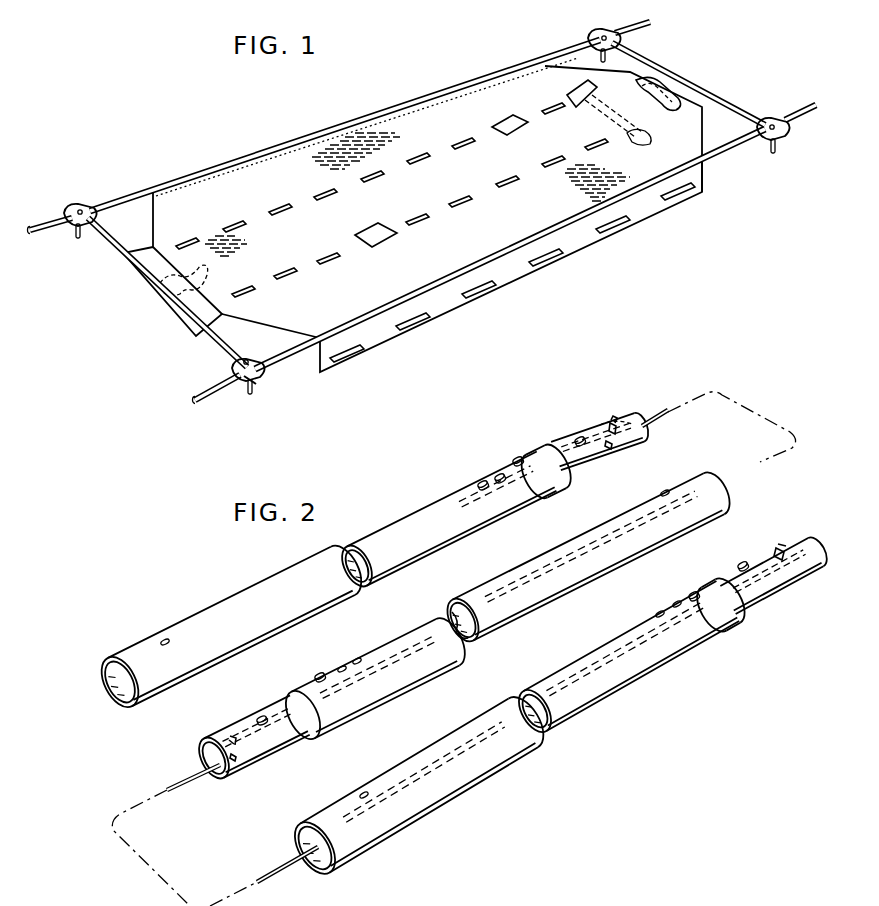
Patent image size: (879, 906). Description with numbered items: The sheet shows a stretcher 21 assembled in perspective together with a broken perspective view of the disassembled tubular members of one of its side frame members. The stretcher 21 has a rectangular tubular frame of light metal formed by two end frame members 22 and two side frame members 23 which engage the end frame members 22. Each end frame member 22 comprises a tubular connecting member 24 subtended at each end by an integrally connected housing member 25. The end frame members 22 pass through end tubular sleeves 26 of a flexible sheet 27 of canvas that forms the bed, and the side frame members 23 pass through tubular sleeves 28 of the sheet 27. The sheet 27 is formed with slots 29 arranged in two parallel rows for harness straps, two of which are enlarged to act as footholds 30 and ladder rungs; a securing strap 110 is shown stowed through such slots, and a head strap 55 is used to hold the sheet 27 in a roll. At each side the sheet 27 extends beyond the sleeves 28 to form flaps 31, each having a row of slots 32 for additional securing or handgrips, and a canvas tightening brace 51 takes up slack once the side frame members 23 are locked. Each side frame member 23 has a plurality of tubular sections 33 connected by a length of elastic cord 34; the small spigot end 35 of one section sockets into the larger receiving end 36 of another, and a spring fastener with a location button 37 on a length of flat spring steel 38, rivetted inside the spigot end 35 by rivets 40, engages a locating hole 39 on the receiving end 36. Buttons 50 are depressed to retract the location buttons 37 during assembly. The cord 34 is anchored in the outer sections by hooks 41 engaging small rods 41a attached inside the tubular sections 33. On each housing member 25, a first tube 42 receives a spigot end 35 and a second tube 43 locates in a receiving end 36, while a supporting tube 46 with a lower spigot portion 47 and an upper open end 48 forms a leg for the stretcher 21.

In FIG. 1, the stretcher 21 is at (212, 108).
In FIG. 1, the end frame member 22 is at (600, 36).
In FIG. 1, the side frame member 23 is at (137, 193).
In FIG. 2, the side frame member 23 is at (616, 740).
In FIG. 1, the tubular connecting member 24 is at (200, 330).
In FIG. 1, the housing member 25 is at (73, 207).
In FIG. 1, the end tubular sleeve 26 is at (165, 302).
In FIG. 1, the flexible sheet 27 is at (370, 140).
In FIG. 1, the tubular sleeve 28 is at (340, 126).
In FIG. 1, the slot 29 is at (461, 140).
In FIG. 1, the foothold 30 is at (495, 124).
In FIG. 1, the flap 31 is at (153, 202).
In FIG. 1, the slot 32 is at (350, 354).
In FIG. 2, the tubular section 33 is at (498, 579).
In FIG. 2, the elastic cord 34 is at (667, 414).
In FIG. 2, the spigot end 35 is at (593, 430).
In FIG. 2, the receiving end 36 is at (133, 650).
In FIG. 2, the location button 37 is at (577, 439).
In FIG. 2, the flat spring steel 38 is at (563, 470).
In FIG. 2, the locating hole 39 is at (166, 639).
In FIG. 2, the rivets 40 is at (483, 483).
In FIG. 2, the hook 41 is at (602, 422).
In FIG. 2, the small rod 41a is at (610, 446).
In FIG. 1, the first tube 42 is at (43, 233).
In FIG. 1, the second tube 43 is at (90, 203).
In FIG. 1, the supporting tube 46 is at (241, 392).
In FIG. 1, the lower spigot portion 47 is at (244, 410).
In FIG. 1, the upper open end 48 is at (247, 360).
In FIG. 2, the button 50 is at (518, 456).
In FIG. 1, the canvas tightening brace 51 is at (160, 284).
In FIG. 1, the head strap 55 is at (667, 108).
In FIG. 1, the securing strap 110 is at (650, 138).